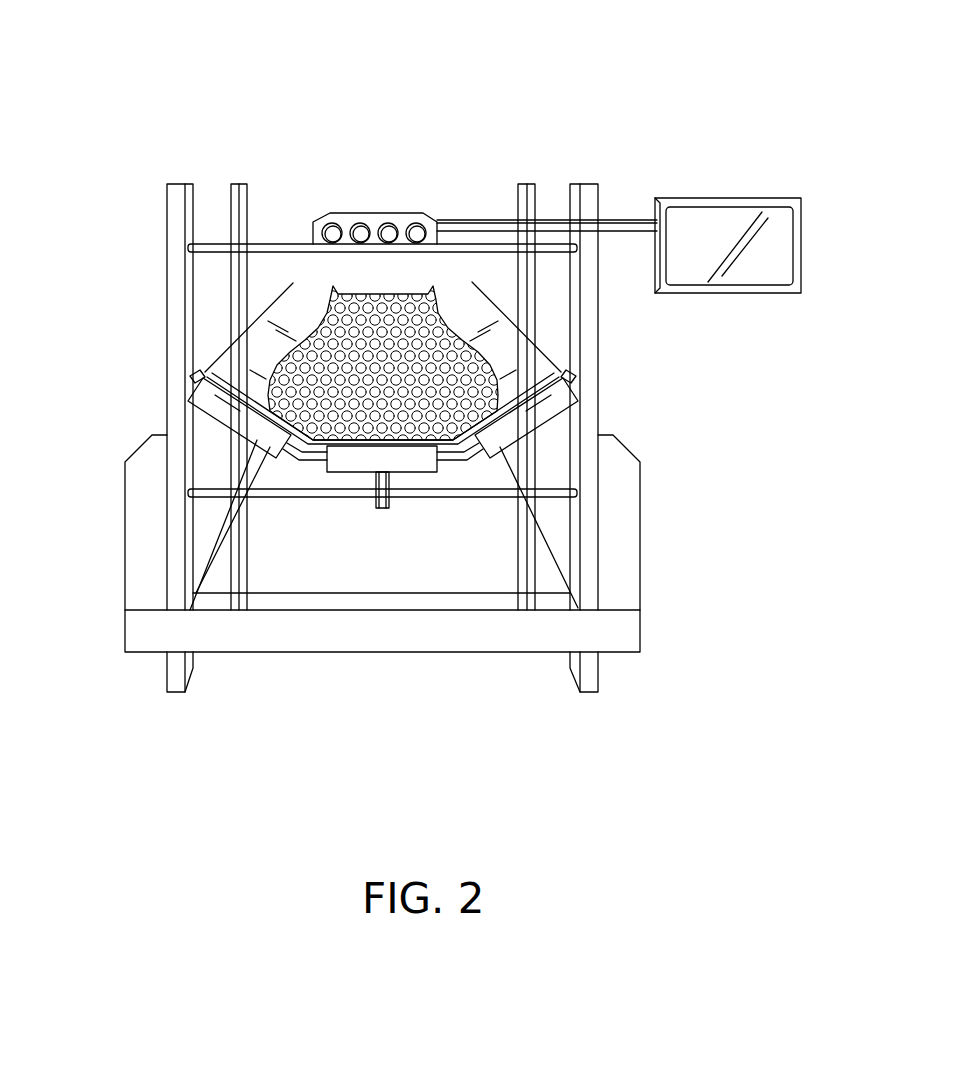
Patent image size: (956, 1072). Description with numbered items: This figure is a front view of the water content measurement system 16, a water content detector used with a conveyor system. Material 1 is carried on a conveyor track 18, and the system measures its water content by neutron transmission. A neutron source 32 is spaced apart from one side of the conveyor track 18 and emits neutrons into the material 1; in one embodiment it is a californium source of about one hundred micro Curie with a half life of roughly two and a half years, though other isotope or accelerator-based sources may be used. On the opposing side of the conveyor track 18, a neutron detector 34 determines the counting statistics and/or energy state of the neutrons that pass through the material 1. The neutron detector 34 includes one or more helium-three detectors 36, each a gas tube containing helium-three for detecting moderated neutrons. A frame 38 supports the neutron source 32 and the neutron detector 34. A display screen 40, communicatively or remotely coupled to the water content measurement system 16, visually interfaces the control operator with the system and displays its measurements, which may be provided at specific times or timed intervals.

The material 1 is at (438, 383).
The water content measurement system 16 is at (754, 523).
The conveyor track 18 is at (522, 397).
The neutron source 32 is at (389, 508).
The neutron detector 34 is at (413, 212).
The He-3 detectors 36 is at (413, 226).
The frame 38 is at (167, 317).
The display screen 40 is at (718, 198).